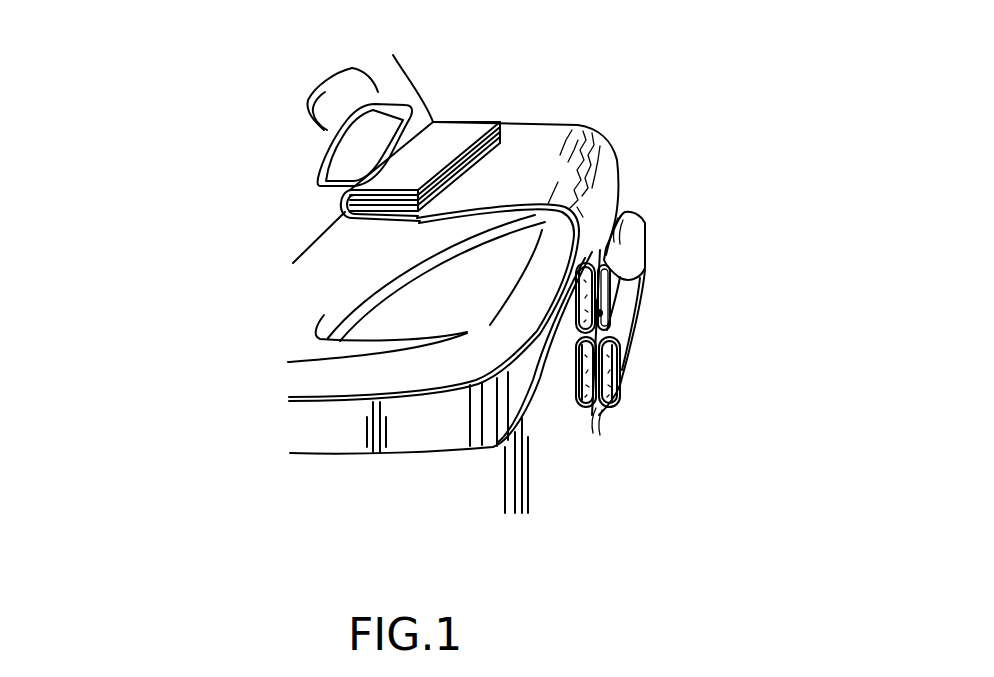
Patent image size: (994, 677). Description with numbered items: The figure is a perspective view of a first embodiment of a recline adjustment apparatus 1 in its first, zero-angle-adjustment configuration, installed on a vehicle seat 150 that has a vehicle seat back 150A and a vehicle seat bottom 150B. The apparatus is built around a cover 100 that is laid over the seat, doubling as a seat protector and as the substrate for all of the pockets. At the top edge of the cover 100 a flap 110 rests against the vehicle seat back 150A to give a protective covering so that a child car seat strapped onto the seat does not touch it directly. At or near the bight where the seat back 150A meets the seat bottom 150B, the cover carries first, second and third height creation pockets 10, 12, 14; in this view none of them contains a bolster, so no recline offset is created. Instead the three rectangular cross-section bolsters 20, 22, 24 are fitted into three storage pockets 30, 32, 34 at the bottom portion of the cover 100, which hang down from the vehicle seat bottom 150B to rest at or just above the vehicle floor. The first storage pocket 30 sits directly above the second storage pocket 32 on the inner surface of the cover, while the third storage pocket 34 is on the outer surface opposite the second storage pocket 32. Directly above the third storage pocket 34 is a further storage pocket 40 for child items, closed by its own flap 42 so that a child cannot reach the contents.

The recline adjustment apparatus 1 is at (645, 76).
The cover 100 is at (534, 147).
The flap 110 is at (389, 127).
The third height creation pocket 14 is at (394, 199).
The second height creation pocket 12 is at (404, 199).
The first height creation pocket 10 is at (378, 210).
The vehicle seat 150 is at (392, 312).
The vehicle seat back 150A is at (280, 176).
The vehicle seat bottom 150B is at (340, 425).
The flap 42 is at (630, 245).
The storage pocket 40 is at (620, 290).
The first bolster 20 is at (578, 300).
The first storage pocket 30 is at (602, 315).
The second bolster 22 is at (580, 389).
The third bolster 24 is at (611, 383).
The second storage pocket 32 is at (580, 412).
The third storage pocket 34 is at (607, 413).